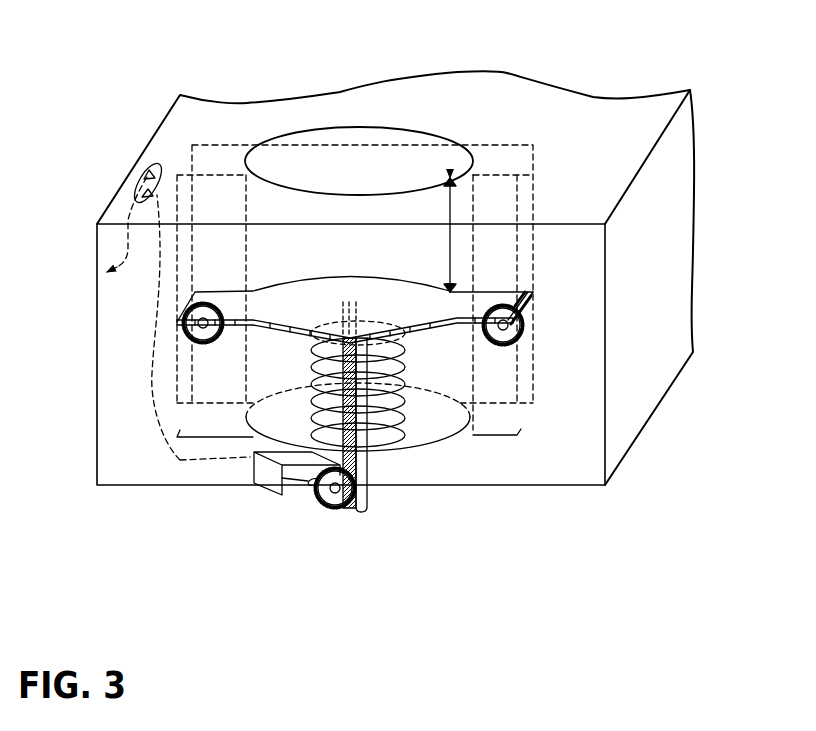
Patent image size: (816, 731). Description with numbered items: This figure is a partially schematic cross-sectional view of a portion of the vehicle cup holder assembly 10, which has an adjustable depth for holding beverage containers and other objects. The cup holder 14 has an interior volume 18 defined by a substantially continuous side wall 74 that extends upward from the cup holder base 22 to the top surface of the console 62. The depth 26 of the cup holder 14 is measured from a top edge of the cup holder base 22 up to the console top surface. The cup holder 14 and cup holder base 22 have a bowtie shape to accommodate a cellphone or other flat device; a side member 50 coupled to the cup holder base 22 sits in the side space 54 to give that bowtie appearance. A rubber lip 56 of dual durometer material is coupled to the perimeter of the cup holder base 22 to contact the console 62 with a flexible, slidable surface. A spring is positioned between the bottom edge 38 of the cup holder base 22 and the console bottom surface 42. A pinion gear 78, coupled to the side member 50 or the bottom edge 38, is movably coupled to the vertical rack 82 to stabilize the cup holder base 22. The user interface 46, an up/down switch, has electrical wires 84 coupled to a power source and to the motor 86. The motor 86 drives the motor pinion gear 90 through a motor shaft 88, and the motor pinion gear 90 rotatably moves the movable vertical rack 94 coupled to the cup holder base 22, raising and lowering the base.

The vehicle cup holder assembly 10 is at (277, 82).
The cup holder 14 is at (340, 123).
The interior volume 18 is at (375, 165).
The cup holder base 22 is at (300, 300).
The depth 26 is at (450, 252).
The bottom edge 38 is at (267, 328).
The console bottom surface 42 is at (270, 423).
The user interface 46 is at (142, 167).
The side member 50 is at (493, 302).
The side space 54 is at (490, 392).
The rubber lip 56 is at (428, 338).
The console 62 is at (578, 117).
The side wall 74 is at (440, 160).
The pinion gear 78 is at (503, 340).
The vertical rack 82 is at (533, 202).
The electrical wires 84 is at (180, 462).
The motor 86 is at (262, 470).
The motor shaft 88 is at (283, 492).
The motor pinion gear 90 is at (323, 503).
The movable vertical rack 94 is at (360, 470).